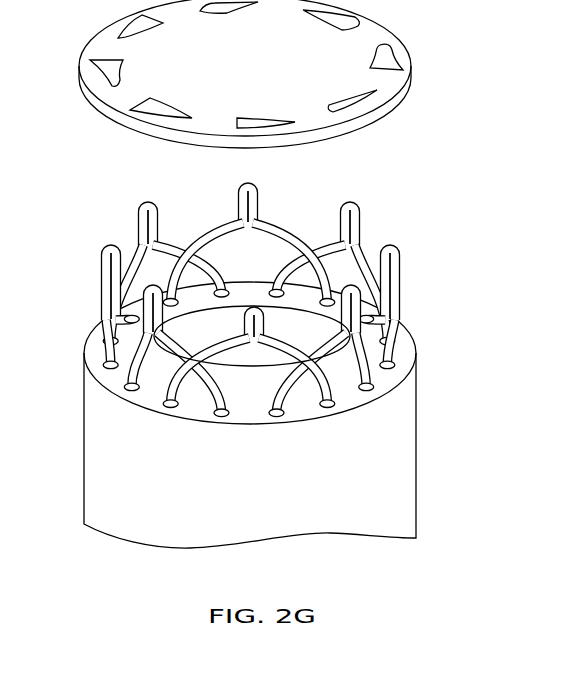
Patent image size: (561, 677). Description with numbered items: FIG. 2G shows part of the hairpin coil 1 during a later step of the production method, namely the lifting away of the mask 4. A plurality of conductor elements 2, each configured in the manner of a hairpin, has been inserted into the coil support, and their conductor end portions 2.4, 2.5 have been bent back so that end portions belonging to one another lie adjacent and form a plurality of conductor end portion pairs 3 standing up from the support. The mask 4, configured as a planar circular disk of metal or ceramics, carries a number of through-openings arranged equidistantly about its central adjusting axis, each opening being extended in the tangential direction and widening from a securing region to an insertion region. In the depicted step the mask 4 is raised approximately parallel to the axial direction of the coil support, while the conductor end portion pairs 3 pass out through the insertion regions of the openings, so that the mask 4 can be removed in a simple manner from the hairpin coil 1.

The hairpin coil 1 is at (265, 274).
The conductor element 2 is at (226, 274).
The conductor end portion 2.4 is at (212, 229).
The conductor end portion 2.5 is at (276, 223).
The conductor end portion pair 3 is at (232, 180).
The mask 4 is at (233, 62).